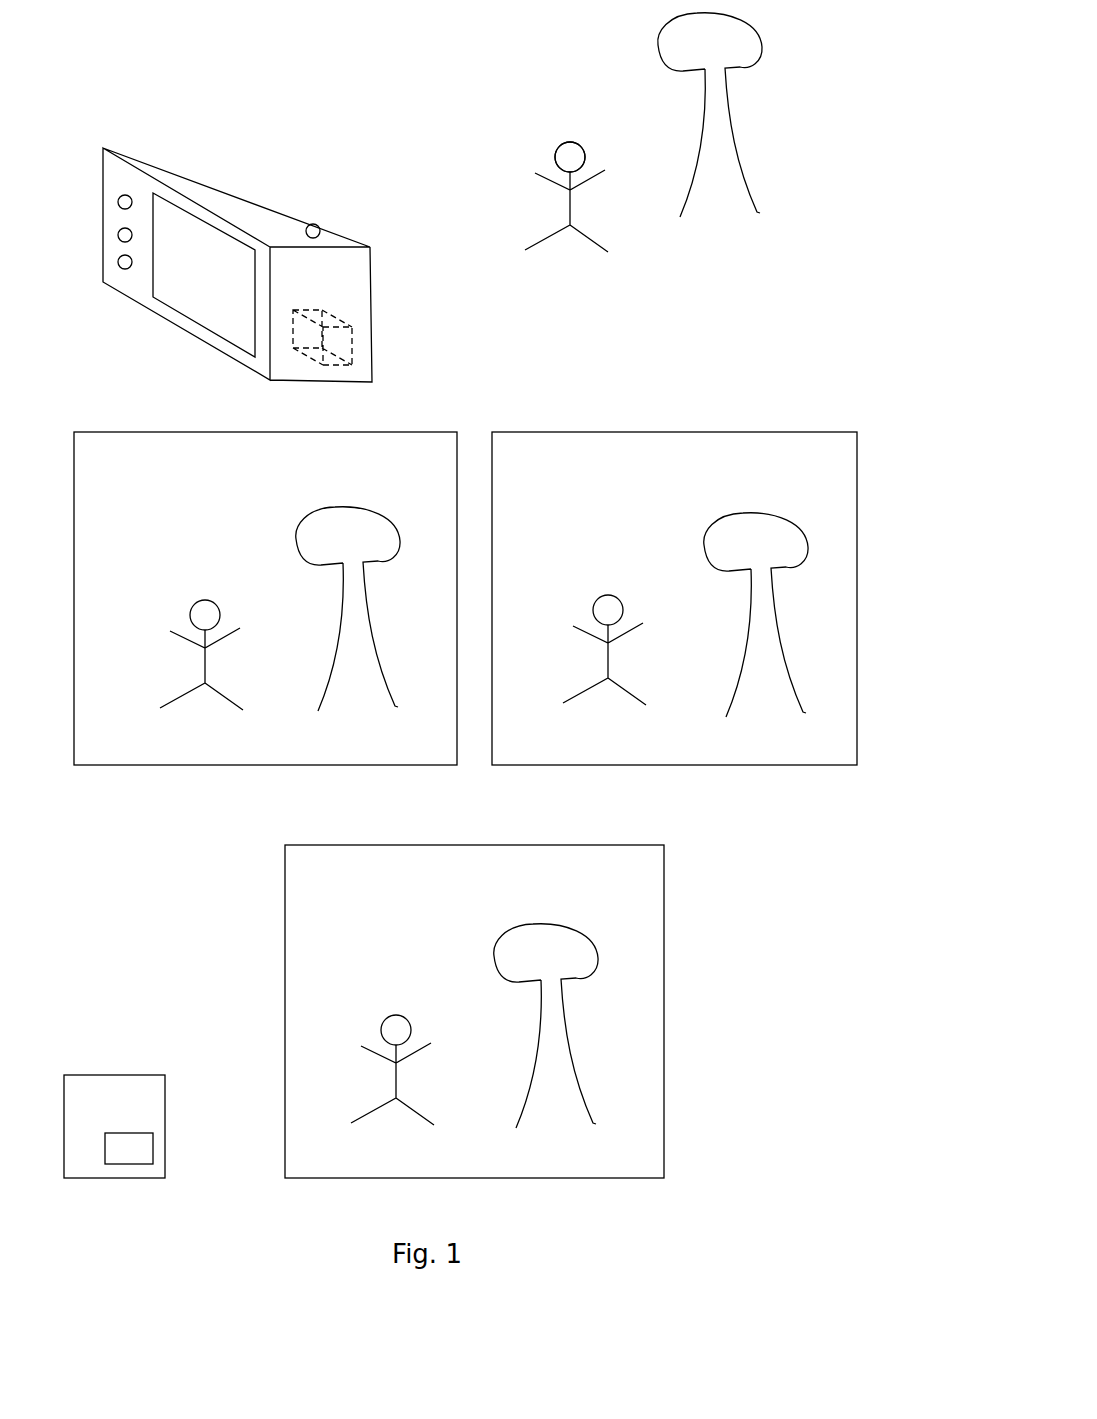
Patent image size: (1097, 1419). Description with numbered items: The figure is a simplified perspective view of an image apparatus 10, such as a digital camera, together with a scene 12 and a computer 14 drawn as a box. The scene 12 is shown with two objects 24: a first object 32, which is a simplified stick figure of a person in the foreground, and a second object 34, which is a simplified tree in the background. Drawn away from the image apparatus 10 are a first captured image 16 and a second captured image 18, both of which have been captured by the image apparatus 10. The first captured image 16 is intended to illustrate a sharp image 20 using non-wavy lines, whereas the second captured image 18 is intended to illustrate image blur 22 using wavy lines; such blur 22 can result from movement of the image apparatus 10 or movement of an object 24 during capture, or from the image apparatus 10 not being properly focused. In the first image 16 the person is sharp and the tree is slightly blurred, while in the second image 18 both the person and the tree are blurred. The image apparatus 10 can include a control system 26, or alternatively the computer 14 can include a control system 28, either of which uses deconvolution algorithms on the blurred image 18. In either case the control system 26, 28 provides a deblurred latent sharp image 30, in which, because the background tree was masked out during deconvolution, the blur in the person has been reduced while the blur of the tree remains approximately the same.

The image apparatus 10 is at (269, 227).
The scene 12 is at (572, 145).
The computer 14 is at (114, 1126).
The first captured image 16 is at (265, 633).
The second captured image 18 is at (674, 635).
The sharp image 20 is at (230, 705).
The image blur 22 is at (650, 710).
The object 24 is at (531, 187).
The control system 26 is at (343, 345).
The control system 28 is at (116, 1161).
The latent sharp image 30 is at (283, 990).
The first object 32 is at (557, 157).
The second object 34 is at (658, 50).